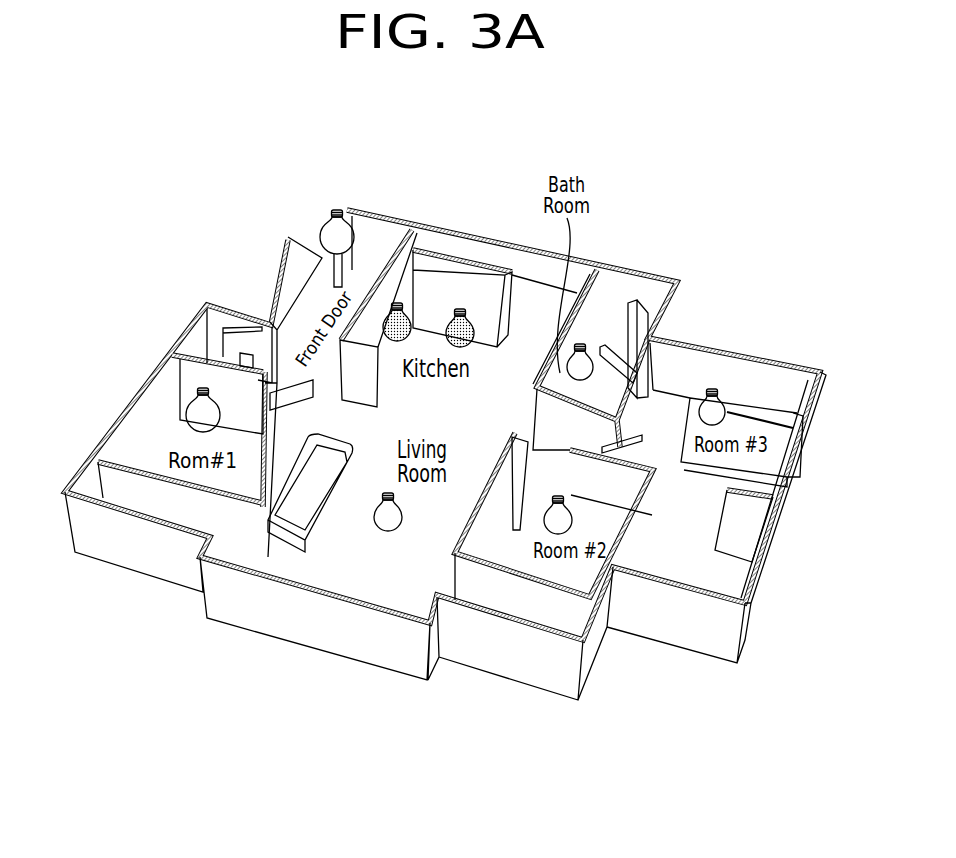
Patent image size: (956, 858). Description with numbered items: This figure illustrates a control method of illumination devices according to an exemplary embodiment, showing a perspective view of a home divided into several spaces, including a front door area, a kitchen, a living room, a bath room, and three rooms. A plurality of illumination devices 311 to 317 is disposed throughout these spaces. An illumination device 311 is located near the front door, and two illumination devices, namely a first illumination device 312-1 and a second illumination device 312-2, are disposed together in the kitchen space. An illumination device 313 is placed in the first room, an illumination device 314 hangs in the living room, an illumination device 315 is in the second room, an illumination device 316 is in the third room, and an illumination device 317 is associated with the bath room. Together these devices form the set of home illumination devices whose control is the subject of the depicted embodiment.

The illumination device 311 is at (333, 228).
The first illumination device 312-1 is at (460, 307).
The second illumination device 312-2 is at (397, 307).
The illumination device 313 is at (200, 420).
The illumination device 314 is at (385, 517).
The illumination device 315 is at (558, 527).
The illumination device 316 is at (715, 413).
The illumination device 317 is at (603, 323).